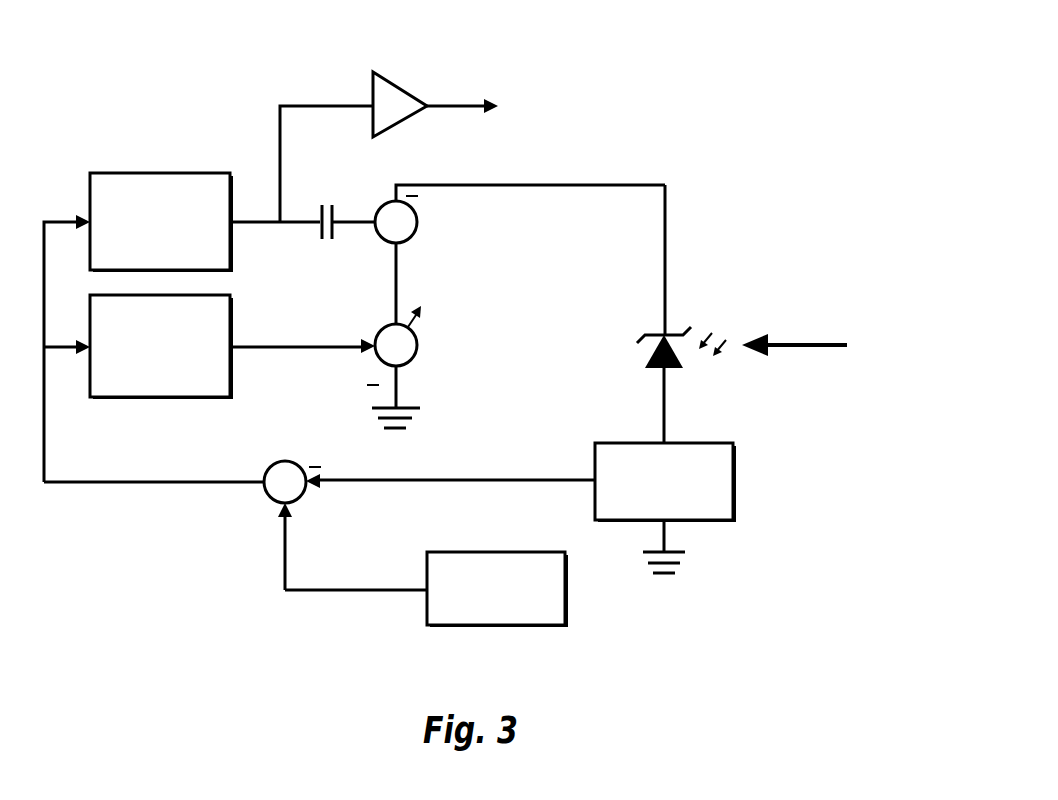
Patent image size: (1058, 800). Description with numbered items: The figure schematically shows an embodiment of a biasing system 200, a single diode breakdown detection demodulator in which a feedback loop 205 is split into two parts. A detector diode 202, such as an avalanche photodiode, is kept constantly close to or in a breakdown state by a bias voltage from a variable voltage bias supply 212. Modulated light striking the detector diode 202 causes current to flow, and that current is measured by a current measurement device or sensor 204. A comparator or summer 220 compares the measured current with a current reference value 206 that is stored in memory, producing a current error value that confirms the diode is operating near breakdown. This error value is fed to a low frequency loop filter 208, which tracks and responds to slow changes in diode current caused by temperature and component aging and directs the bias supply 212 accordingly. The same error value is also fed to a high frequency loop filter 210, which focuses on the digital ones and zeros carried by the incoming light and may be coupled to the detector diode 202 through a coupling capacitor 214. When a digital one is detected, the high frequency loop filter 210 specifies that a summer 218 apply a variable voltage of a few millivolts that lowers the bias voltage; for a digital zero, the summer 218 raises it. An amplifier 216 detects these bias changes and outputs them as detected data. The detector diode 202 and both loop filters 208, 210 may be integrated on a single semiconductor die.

The biasing system 200 is at (588, 52).
The detector diode 202 is at (673, 332).
The current measurement device or sensor 204 is at (733, 480).
The feedback loop 205 is at (130, 512).
The current reference value 206 is at (565, 590).
The low frequency loop filter 208 is at (160, 397).
The high frequency loop filter 210 is at (160, 173).
The variable voltage bias supply 212 is at (378, 360).
The coupling capacitor 214 is at (318, 240).
The amplifier 216 is at (412, 92).
The summer 218 is at (417, 224).
The comparator or summer 220 is at (268, 498).